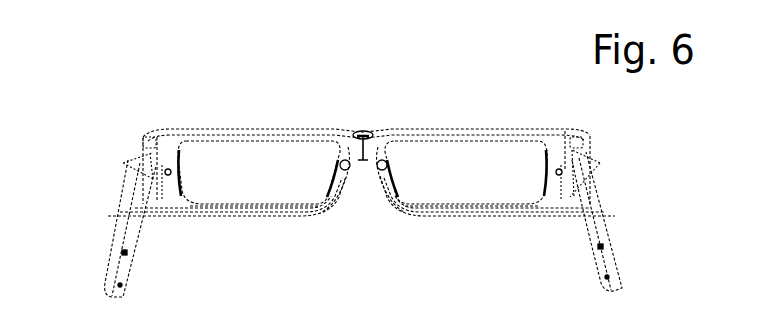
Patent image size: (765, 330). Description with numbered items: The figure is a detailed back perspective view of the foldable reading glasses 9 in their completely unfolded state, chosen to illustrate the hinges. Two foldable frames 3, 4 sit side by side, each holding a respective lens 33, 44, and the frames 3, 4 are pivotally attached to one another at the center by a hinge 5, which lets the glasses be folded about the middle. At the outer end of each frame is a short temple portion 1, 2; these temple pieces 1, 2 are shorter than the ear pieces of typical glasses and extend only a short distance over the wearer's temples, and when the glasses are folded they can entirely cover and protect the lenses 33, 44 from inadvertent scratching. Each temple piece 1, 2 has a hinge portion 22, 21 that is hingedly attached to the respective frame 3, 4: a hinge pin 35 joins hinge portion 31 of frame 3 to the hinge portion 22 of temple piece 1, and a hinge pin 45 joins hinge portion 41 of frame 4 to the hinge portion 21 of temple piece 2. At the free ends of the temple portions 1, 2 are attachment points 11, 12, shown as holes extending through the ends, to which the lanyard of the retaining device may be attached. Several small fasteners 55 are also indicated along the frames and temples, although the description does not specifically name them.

The foldable reading glasses 9 is at (106, 72).
The temple portion 1 is at (145, 212).
The temple portion 2 is at (600, 215).
The foldable frame 3 is at (254, 128).
The foldable frame 4 is at (474, 128).
The hinge 5 is at (364, 128).
The attachment point 11 is at (122, 285).
The attachment point 12 is at (605, 277).
The hinge portion 21 is at (563, 192).
The hinge portion 22 is at (164, 190).
The hinge portion 31 is at (124, 163).
The hinge portion 41 is at (602, 163).
The lens 33 is at (257, 221).
The lens 44 is at (476, 221).
The hinge pin 35 is at (152, 140).
The hinge pin 45 is at (574, 137).
The fastener 55 is at (168, 168).